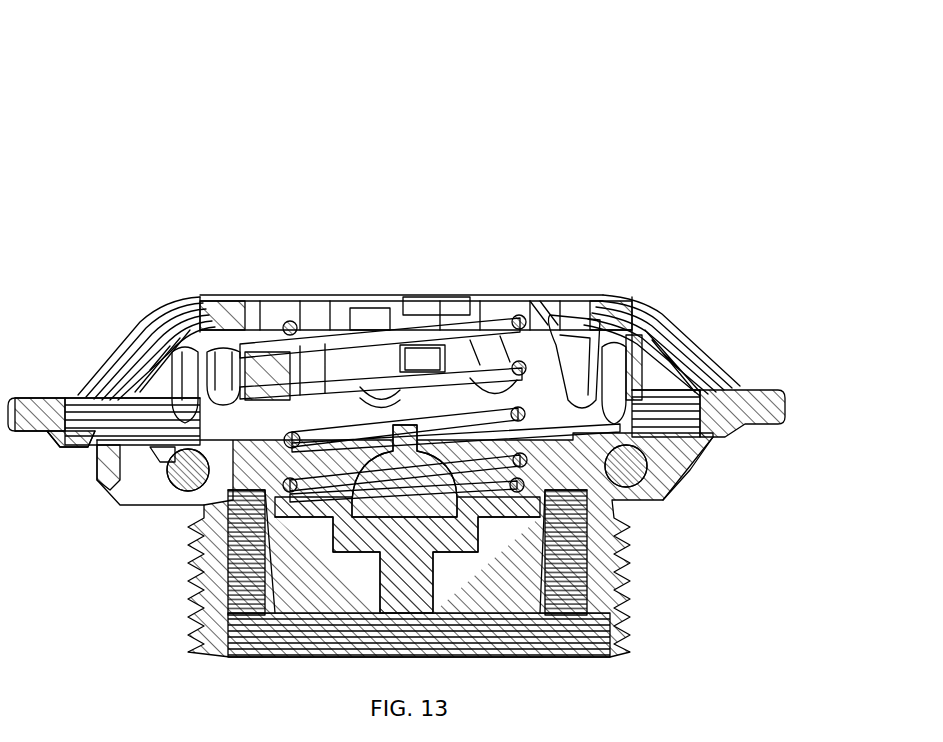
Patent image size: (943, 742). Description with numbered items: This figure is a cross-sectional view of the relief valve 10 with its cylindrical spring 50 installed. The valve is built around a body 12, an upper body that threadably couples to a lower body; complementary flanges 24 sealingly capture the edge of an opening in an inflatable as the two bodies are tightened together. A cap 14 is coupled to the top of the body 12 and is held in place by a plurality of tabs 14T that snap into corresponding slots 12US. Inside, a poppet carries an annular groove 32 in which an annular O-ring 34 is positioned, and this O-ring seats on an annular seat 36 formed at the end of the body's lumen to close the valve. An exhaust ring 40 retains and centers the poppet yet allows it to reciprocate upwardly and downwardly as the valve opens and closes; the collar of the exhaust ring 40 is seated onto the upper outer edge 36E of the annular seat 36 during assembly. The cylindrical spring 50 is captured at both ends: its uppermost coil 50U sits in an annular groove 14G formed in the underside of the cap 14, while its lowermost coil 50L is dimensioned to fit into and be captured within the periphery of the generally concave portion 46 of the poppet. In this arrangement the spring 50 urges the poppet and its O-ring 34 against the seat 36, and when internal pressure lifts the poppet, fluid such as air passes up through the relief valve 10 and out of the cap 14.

The relief valve 10 is at (658, 66).
The body 12 is at (193, 507).
The slots 12US is at (728, 437).
The cap 14 is at (640, 300).
The annular groove 14G is at (538, 318).
The tabs 14T is at (745, 432).
The flanges 24 is at (138, 487).
The annular groove 32 is at (190, 442).
The annular O-ring 34 is at (647, 467).
The annular seat 36 is at (660, 493).
The upper outer edge 36E is at (167, 460).
The exhaust ring 40 is at (233, 397).
The concave portion 46 is at (555, 488).
The cylindrical spring 50 is at (408, 390).
The uppermost coil 50U is at (513, 322).
The lowermost coil 50L is at (545, 495).